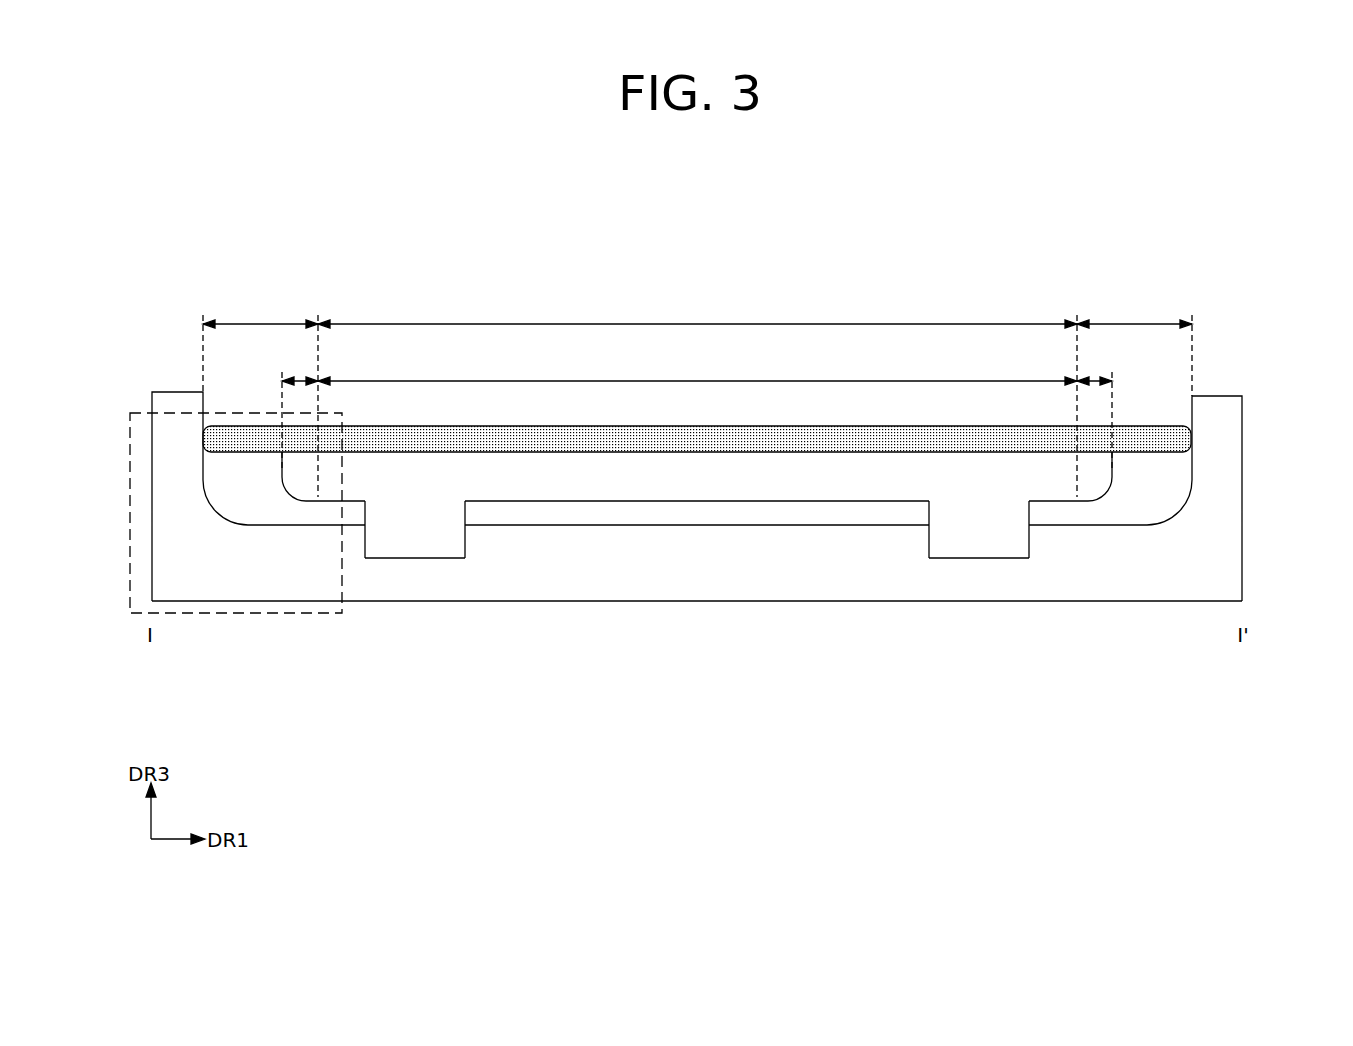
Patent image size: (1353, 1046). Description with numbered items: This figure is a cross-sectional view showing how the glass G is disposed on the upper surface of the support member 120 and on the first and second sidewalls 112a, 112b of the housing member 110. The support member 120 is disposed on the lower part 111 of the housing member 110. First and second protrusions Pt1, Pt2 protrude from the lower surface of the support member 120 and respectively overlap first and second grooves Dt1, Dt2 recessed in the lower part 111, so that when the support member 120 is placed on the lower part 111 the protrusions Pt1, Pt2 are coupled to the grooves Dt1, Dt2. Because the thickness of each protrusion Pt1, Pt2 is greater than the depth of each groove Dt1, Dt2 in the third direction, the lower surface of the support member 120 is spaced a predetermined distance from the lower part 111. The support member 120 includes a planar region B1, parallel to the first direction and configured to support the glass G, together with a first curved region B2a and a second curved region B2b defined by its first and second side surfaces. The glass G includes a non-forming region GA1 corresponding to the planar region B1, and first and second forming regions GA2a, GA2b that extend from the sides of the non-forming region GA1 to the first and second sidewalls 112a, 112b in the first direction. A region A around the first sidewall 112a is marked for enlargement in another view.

The housing member 110 is at (1250, 498).
The lower part 111 is at (670, 527).
The first sidewall 112a is at (211, 511).
The second sidewall 112b is at (1178, 513).
The support member 120 is at (798, 482).
The glass G is at (575, 435).
The first groove Dt1 is at (386, 561).
The second groove Dt2 is at (955, 562).
The first protrusion Pt1 is at (445, 548).
The second protrusion Pt2 is at (1008, 548).
The region A is at (130, 502).
The non-forming region GA1 is at (697, 395).
The first forming region GA2a is at (260, 343).
The second forming region GA2b is at (1134, 345).
The planar region B1 is at (697, 369).
The first curved region B2a is at (296, 411).
The second curved region B2b is at (1098, 411).